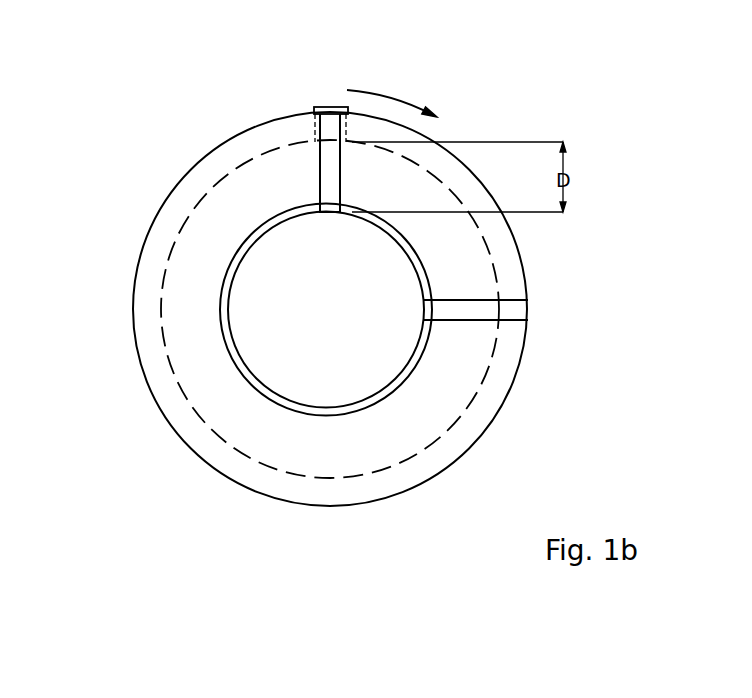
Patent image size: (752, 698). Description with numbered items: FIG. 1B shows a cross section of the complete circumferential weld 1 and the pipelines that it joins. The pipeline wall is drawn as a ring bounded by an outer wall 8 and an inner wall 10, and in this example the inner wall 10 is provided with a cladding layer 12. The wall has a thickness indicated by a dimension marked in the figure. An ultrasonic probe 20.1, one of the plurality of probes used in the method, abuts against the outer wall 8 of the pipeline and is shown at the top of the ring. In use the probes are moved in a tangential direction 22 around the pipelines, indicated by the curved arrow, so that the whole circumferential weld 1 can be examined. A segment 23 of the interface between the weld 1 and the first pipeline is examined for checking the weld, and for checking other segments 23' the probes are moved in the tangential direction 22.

The weld 1 is at (203, 248).
The outer wall 8 is at (178, 392).
The inner wall 10 is at (220, 310).
The cladding layer 12 is at (228, 337).
The ultrasonic probe 20.1 is at (330, 107).
The tangential direction 22 is at (380, 95).
The segment 23 is at (280, 90).
The other segment 23' is at (531, 279).